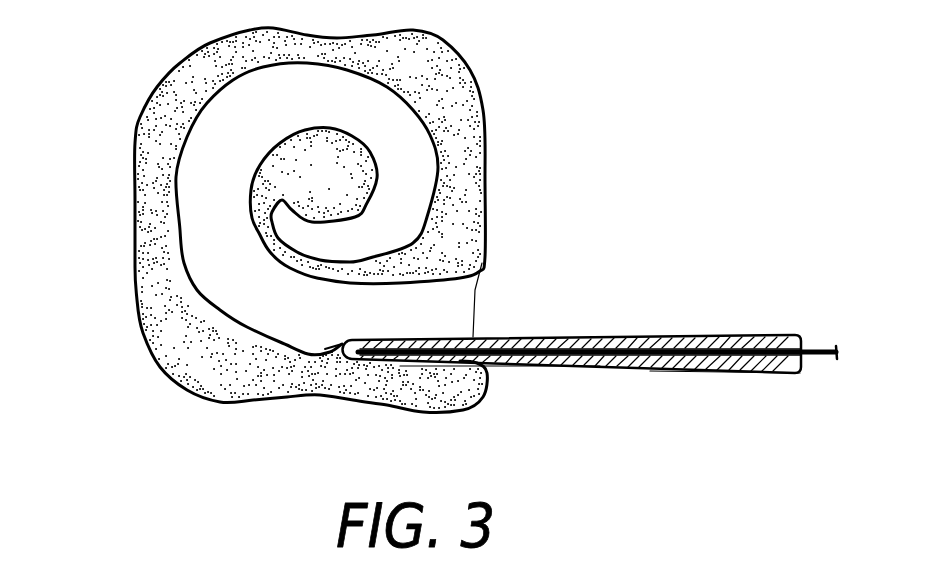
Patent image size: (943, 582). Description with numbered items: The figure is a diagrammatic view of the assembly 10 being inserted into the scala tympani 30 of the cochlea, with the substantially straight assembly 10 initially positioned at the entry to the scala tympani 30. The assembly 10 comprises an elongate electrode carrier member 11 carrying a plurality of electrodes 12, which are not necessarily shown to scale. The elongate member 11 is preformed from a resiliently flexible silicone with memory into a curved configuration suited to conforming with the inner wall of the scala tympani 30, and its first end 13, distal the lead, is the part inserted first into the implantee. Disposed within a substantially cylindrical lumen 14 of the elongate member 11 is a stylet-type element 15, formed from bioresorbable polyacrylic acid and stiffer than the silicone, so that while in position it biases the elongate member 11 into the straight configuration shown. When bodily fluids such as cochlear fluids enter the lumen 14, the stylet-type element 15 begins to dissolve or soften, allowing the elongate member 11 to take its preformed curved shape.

The assembly 10 is at (715, 330).
The elongate electrode carrier member 11 is at (724, 370).
The electrodes 12 is at (547, 337).
The first end 13 is at (322, 348).
The lumen 14 is at (599, 366).
The stylet-type element 15 is at (828, 357).
The scala tympani 30 is at (198, 223).